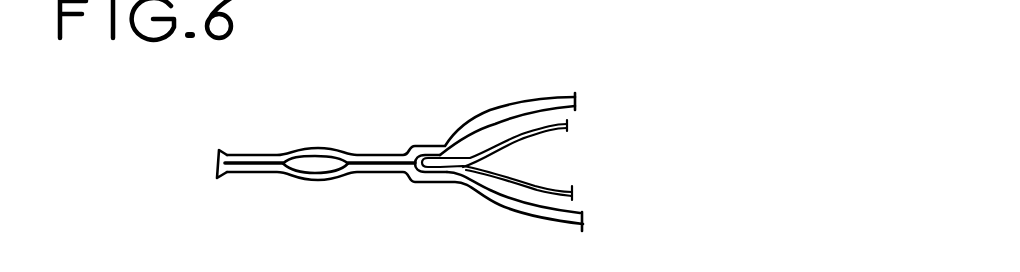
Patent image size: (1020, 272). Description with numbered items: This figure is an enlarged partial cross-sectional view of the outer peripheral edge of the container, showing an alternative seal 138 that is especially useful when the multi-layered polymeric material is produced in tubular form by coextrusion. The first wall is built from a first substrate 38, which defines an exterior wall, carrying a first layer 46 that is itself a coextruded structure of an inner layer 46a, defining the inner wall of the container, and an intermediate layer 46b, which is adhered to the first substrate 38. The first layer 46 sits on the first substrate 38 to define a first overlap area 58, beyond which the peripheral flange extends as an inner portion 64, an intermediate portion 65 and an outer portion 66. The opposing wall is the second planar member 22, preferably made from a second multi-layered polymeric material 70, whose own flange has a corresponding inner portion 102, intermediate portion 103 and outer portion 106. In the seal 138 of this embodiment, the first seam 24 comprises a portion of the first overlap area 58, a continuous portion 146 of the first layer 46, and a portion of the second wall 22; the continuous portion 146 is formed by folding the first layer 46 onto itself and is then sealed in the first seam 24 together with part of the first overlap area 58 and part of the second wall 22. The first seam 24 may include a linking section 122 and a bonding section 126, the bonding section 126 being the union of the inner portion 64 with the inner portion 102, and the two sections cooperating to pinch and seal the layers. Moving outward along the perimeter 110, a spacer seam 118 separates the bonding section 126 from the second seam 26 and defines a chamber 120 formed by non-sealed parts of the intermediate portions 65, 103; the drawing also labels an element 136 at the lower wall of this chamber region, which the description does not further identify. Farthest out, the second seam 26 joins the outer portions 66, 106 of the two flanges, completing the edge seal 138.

The second planar member 22 is at (585, 225).
The first seam 24 is at (405, 138).
The second seam 26 is at (254, 163).
The first substrate 38 is at (575, 100).
The first layer 46 is at (577, 125).
The inner layer 46a is at (560, 128).
The intermediate layer 46b is at (565, 127).
The first overlap area 58 is at (430, 155).
The inner portion 64 is at (383, 154).
The intermediate portion 65 is at (317, 150).
The outer portion 66 is at (222, 152).
The second multi-layered polymeric material 70 is at (567, 15).
The inner portion 102 is at (393, 172).
The intermediate portion 103 is at (315, 180).
The outer portion 106 is at (238, 172).
The perimeter 110 is at (430, 82).
The spacer seam 118 is at (342, 145).
The chamber 120 is at (305, 161).
The linking section 122 is at (437, 188).
The bonding section 126 is at (372, 167).
The balloon seam 136 is at (333, 180).
The seal 138 is at (305, 83).
The continuous portion 146 is at (437, 161).